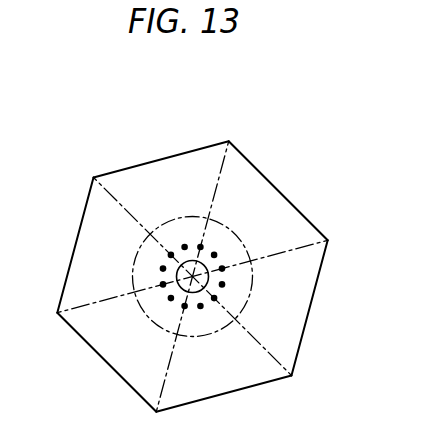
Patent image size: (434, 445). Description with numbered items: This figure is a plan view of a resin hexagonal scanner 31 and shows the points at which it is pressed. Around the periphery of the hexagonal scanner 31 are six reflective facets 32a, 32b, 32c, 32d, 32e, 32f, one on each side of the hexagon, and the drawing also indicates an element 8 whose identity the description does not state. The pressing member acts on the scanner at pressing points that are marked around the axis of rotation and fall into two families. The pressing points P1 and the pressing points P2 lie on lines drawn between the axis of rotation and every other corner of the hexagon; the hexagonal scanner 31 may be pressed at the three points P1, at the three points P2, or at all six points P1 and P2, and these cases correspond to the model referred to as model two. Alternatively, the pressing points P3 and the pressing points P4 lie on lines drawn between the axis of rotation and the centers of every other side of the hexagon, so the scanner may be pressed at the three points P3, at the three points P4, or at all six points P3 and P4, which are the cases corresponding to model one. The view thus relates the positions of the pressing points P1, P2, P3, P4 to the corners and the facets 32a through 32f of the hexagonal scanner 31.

The hexagonal scanner 31 is at (263, 77).
The reflective facet 32a is at (261, 174).
The reflective facet 32b is at (313, 298).
The reflective facet 32c is at (268, 381).
The reflective facet 32d is at (103, 358).
The reflective facet 32e is at (78, 235).
The reflective facet 32f is at (145, 163).
The rotation axis 8 is at (196, 279).
The pressing point P1 is at (222, 269).
The pressing point P2 is at (214, 255).
The pressing point P3 is at (200, 247).
The pressing point P4 is at (185, 247).